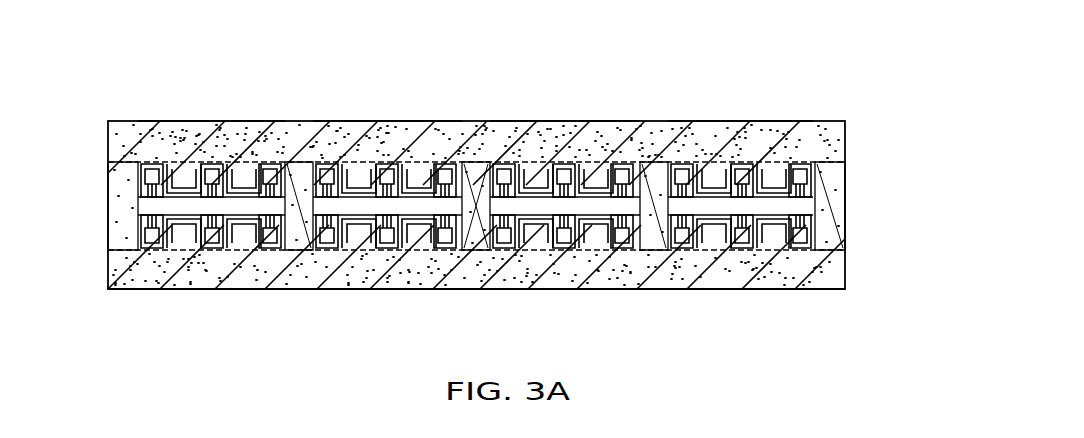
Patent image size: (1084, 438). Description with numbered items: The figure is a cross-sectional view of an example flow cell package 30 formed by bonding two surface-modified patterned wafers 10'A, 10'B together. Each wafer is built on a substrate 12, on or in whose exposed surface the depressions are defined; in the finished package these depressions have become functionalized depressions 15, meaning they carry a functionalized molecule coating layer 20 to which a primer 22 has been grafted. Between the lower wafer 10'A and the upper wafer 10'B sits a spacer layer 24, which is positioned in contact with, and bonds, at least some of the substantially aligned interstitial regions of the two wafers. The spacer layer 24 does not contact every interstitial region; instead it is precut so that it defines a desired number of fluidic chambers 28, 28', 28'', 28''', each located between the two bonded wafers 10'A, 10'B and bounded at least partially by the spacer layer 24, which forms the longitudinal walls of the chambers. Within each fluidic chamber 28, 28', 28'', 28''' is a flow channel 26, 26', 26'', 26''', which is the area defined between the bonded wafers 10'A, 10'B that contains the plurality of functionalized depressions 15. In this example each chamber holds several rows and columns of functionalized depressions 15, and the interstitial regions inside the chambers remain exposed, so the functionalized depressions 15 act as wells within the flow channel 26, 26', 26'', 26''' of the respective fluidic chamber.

The flow cell package 30 is at (122, 76).
The surface-modified patterned wafer 10'A is at (534, 260).
The surface-modified patterned wafer 10'B is at (534, 153).
The substrate 12 is at (745, 289).
The functionalized depressions 15 is at (374, 198).
The functionalized molecule coating layer 20 is at (333, 178).
The primer 22 is at (585, 178).
The spacer layer 24 is at (112, 205).
The flow channel 26 is at (211, 249).
The flow channel 26' is at (408, 249).
The flow channel 26'' is at (556, 165).
The flow channel 26''' is at (739, 249).
The fluidic chamber 28 is at (211, 99).
The fluidic chamber 28' is at (387, 119).
The fluidic chamber 28'' is at (565, 119).
The fluidic chamber 28''' is at (740, 118).